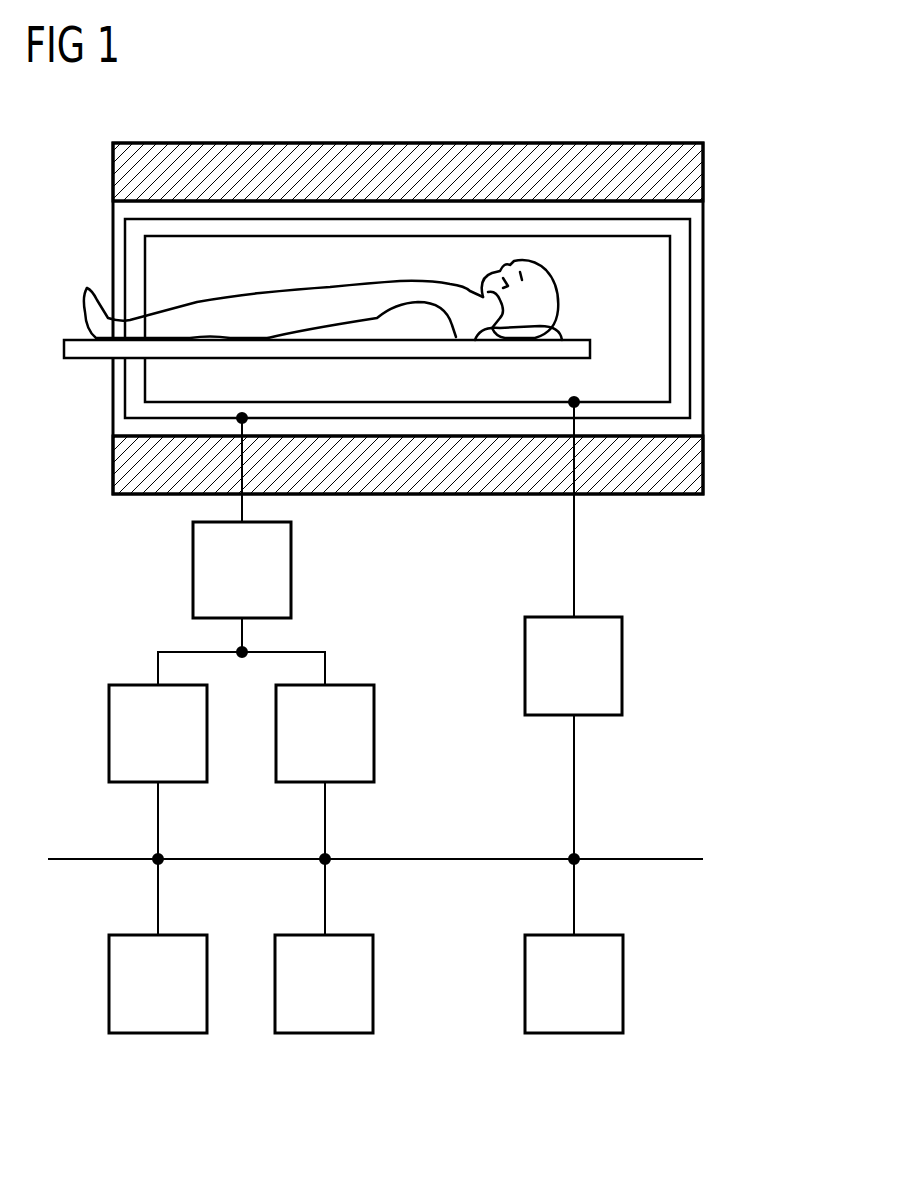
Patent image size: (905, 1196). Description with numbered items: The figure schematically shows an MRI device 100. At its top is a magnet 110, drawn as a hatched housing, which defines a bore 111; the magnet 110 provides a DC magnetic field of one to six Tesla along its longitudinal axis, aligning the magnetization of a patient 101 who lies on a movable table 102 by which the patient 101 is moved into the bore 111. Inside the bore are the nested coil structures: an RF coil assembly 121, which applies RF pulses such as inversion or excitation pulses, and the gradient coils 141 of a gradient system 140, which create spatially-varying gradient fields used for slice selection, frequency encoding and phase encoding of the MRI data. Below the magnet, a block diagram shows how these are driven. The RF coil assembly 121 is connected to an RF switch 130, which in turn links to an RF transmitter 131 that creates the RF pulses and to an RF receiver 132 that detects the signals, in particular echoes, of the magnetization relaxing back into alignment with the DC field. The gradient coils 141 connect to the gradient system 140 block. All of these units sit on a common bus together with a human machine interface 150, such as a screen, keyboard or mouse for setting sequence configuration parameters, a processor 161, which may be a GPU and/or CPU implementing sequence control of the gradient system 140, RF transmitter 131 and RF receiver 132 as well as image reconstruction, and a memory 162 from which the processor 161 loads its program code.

The MRI device 100 is at (668, 110).
The patient 101 is at (88, 288).
The movable table 102 is at (72, 347).
The magnet 110 is at (411, 143).
The bore 111 is at (668, 202).
The RF coil assembly 121 is at (692, 308).
The RF switch 130 is at (193, 570).
The RF transmitter 131 is at (109, 738).
The RF receiver 132 is at (374, 733).
The gradient system 140 is at (525, 666).
The gradient coils 141 is at (670, 382).
The human machine interface 150 is at (109, 985).
The processor 161 is at (373, 985).
The memory 162 is at (623, 975).